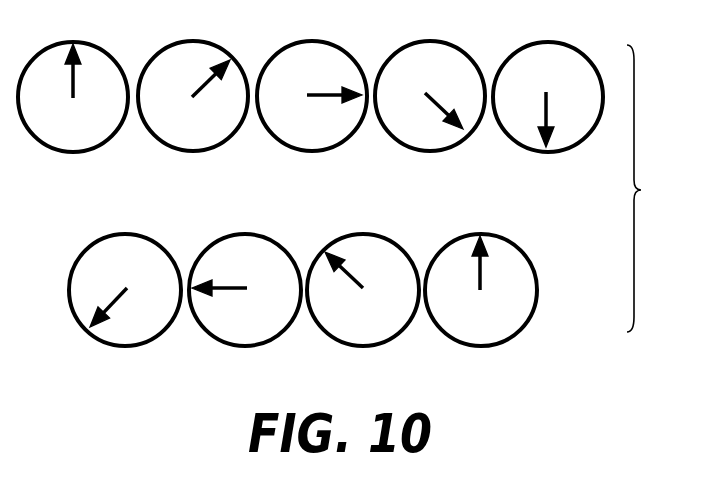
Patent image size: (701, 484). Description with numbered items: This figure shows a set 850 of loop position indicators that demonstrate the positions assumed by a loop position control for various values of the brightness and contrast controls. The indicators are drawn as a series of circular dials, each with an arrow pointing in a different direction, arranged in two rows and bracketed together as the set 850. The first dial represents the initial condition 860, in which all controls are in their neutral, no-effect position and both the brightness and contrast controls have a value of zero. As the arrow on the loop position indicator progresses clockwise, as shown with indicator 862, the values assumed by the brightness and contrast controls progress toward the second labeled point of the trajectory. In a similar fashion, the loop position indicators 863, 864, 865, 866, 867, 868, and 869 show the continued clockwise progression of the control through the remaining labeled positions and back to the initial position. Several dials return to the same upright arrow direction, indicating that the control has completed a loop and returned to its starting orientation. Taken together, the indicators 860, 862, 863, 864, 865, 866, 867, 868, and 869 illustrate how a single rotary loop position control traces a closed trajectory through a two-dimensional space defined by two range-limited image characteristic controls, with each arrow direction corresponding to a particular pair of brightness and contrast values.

The set of corresponding positions for the loop position control 850 is at (659, 188).
The initial condition 860 is at (80, 42).
The indicator 862 is at (202, 41).
The loop position indicator 863 is at (326, 41).
The loop position indicator 864 is at (444, 41).
The loop position indicator 865 is at (566, 42).
The loop position indicator 866 is at (149, 234).
The loop position indicator 867 is at (271, 234).
The loop position indicator 868 is at (391, 234).
The loop position indicator 869 is at (512, 234).